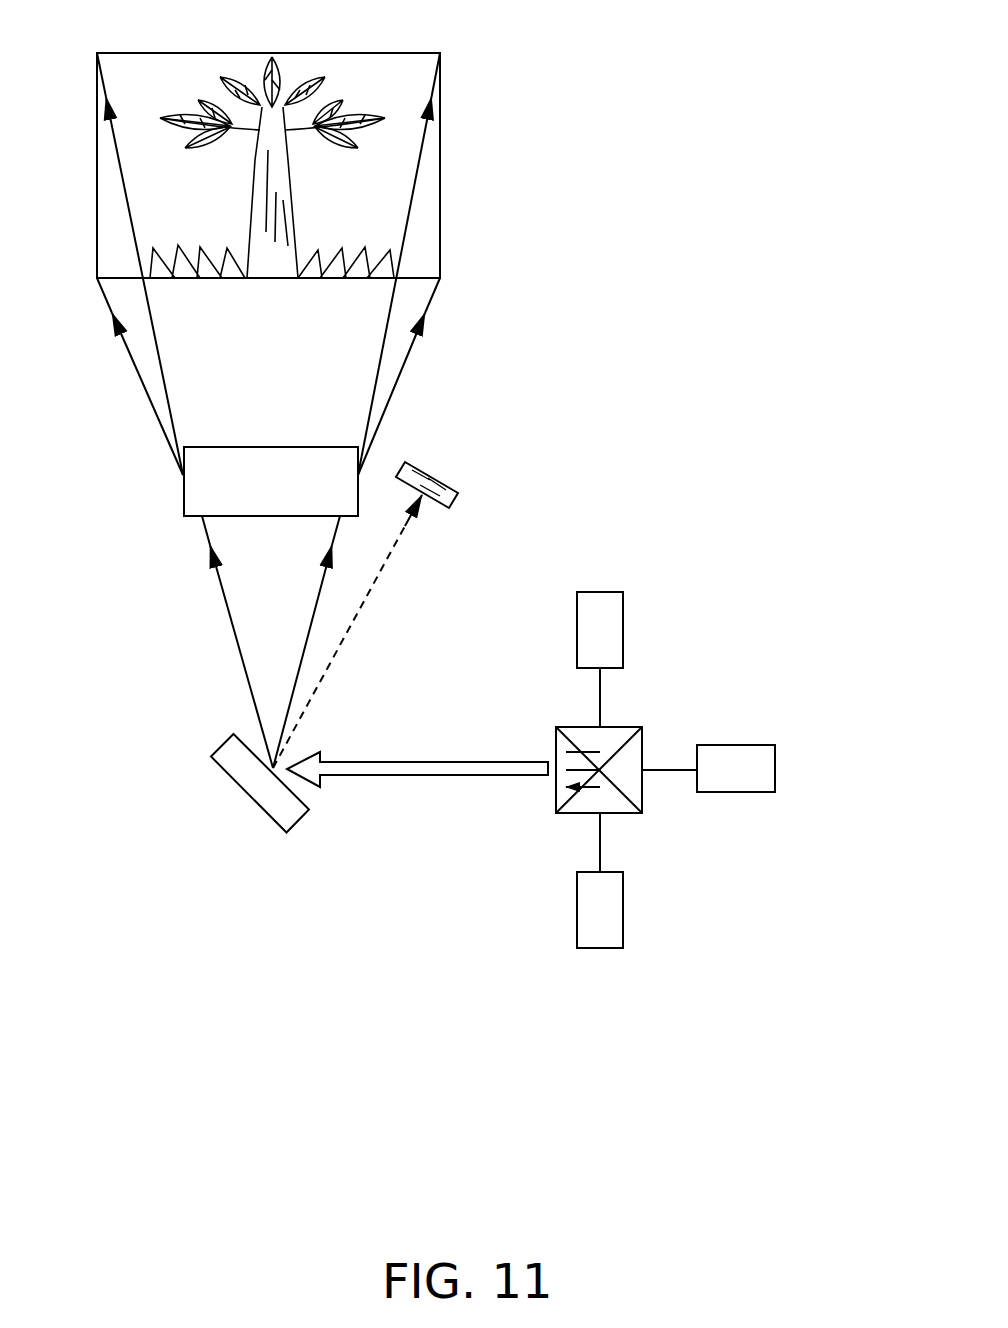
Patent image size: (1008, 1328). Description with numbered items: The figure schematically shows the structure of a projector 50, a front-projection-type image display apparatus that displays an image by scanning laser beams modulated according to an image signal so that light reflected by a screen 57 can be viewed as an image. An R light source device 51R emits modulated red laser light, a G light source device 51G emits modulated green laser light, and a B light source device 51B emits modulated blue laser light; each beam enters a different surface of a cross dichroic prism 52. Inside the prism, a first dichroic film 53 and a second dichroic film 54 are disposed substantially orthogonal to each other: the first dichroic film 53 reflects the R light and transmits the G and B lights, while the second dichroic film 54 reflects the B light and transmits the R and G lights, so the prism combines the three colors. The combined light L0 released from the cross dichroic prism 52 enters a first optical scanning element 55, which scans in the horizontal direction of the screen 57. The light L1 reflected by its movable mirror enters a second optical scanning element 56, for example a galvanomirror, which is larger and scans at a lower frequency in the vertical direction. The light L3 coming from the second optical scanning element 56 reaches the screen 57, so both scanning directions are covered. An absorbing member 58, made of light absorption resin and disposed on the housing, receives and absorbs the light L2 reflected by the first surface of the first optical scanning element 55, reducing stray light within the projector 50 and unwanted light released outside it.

The projector 50 is at (570, 397).
The R light source device 51R is at (597, 597).
The G light source device 51G is at (767, 767).
The B light source device 51B is at (615, 917).
The cross dichroic prism 52 is at (548, 827).
The first dichroic film 53 is at (625, 747).
The second dichroic film 54 is at (630, 793).
The first optical scanning element 55 is at (257, 788).
The second optical scanning element 56 is at (271, 460).
The screen 57 is at (400, 72).
The absorbing member 58 is at (438, 492).
The light L0 is at (432, 762).
The light L1 is at (222, 597).
The light L2 is at (373, 597).
The light L3 is at (140, 382).